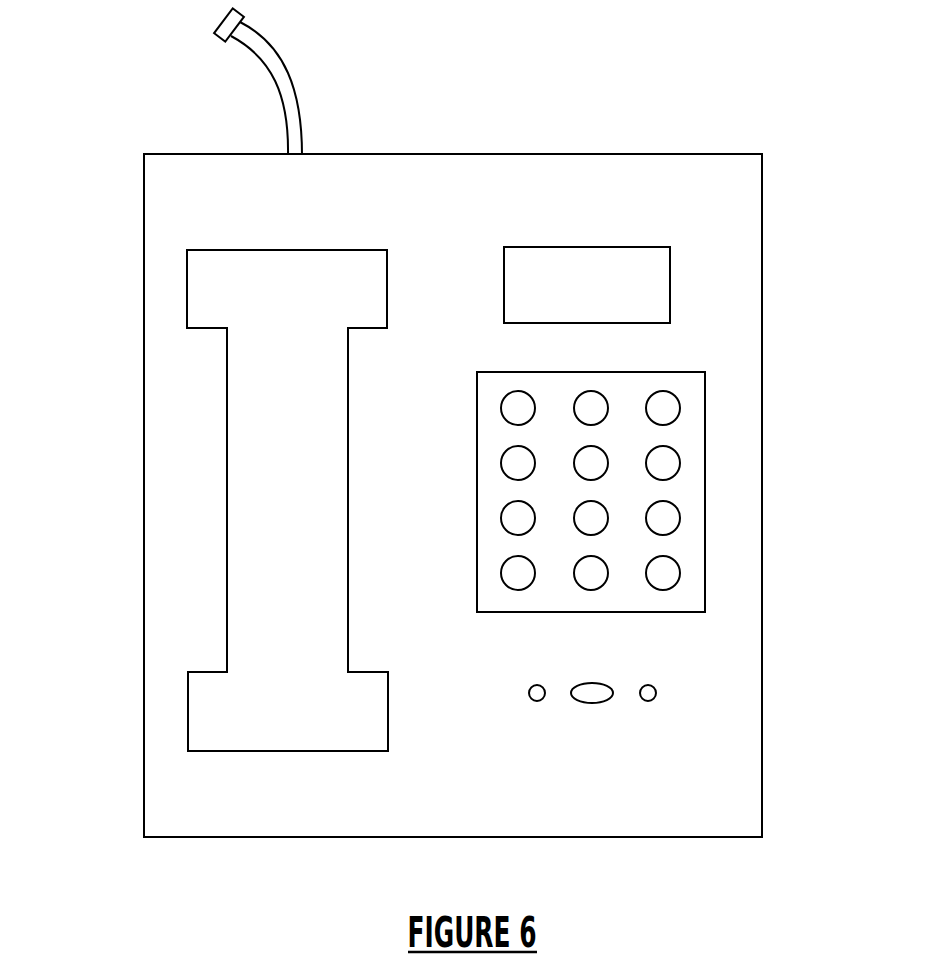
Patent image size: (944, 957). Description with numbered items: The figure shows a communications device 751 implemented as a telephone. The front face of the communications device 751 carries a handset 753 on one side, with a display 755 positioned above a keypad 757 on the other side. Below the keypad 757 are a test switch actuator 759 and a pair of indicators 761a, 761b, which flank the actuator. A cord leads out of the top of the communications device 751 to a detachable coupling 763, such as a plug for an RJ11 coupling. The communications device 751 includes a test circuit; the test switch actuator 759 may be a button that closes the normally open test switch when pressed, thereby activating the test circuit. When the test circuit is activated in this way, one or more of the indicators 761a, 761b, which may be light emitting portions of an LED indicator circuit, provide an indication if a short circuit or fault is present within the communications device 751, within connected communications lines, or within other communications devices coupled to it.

The communications device 751 is at (512, 153).
The handset 753 is at (227, 462).
The display 755 is at (670, 281).
The keypad 757 is at (688, 478).
The test switch actuator 759 is at (592, 703).
The indicator 761a is at (647, 687).
The indicator 761b is at (528, 693).
The detachable coupling 763 is at (222, 13).